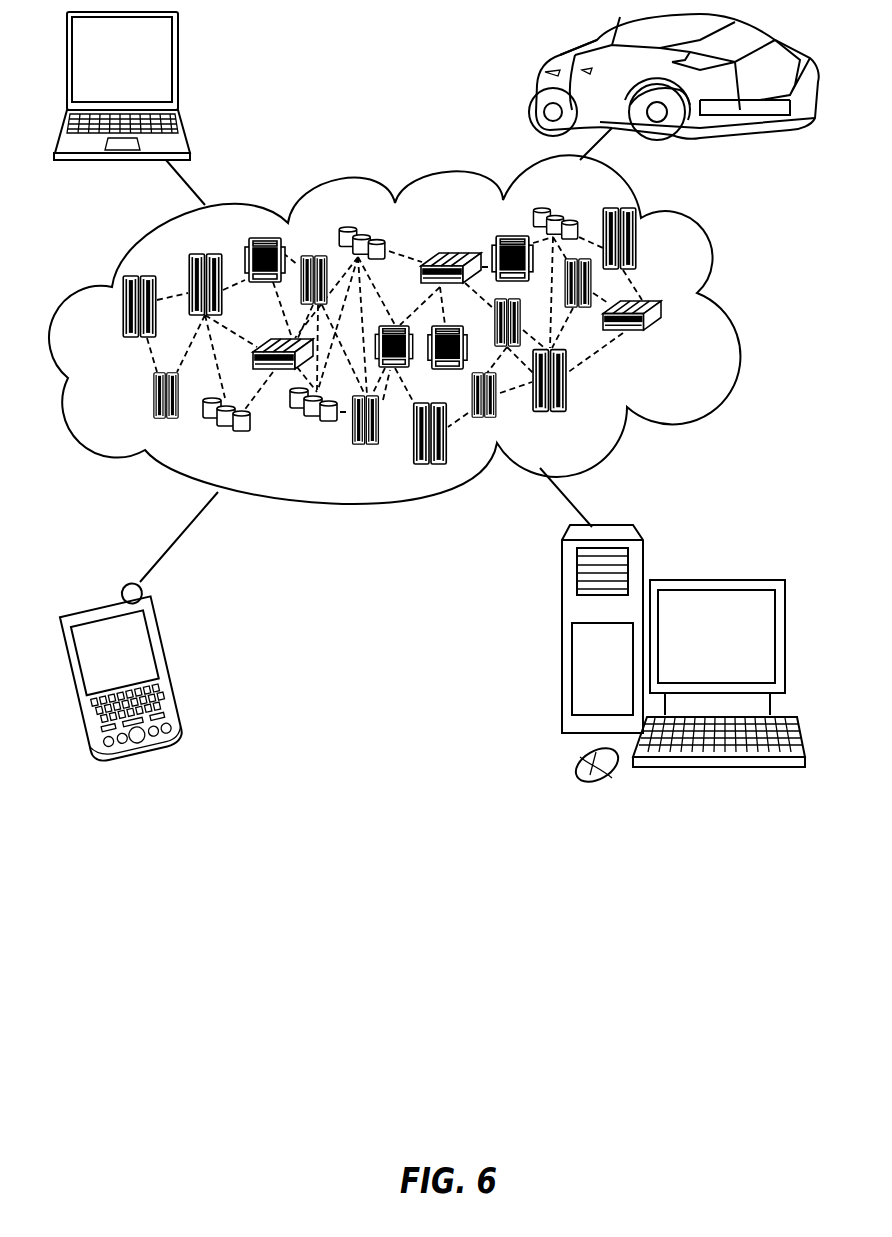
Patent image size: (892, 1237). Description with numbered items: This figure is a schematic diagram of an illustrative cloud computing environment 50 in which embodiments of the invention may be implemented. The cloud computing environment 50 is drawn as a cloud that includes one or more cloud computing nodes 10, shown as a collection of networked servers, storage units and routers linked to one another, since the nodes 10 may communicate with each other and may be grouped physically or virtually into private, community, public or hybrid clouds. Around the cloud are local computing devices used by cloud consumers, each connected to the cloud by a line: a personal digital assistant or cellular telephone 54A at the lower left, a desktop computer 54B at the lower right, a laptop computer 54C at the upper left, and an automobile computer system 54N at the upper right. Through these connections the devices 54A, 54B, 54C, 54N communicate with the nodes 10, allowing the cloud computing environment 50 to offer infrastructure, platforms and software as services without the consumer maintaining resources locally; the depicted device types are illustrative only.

The cloud computing nodes 10 is at (676, 349).
The cloud computing environment 50 is at (407, 329).
The personal digital assistant or cellular telephone 54A is at (172, 660).
The desktop computer 54B is at (713, 580).
The laptop computer 54C is at (180, 65).
The automobile computer system 54N is at (537, 82).